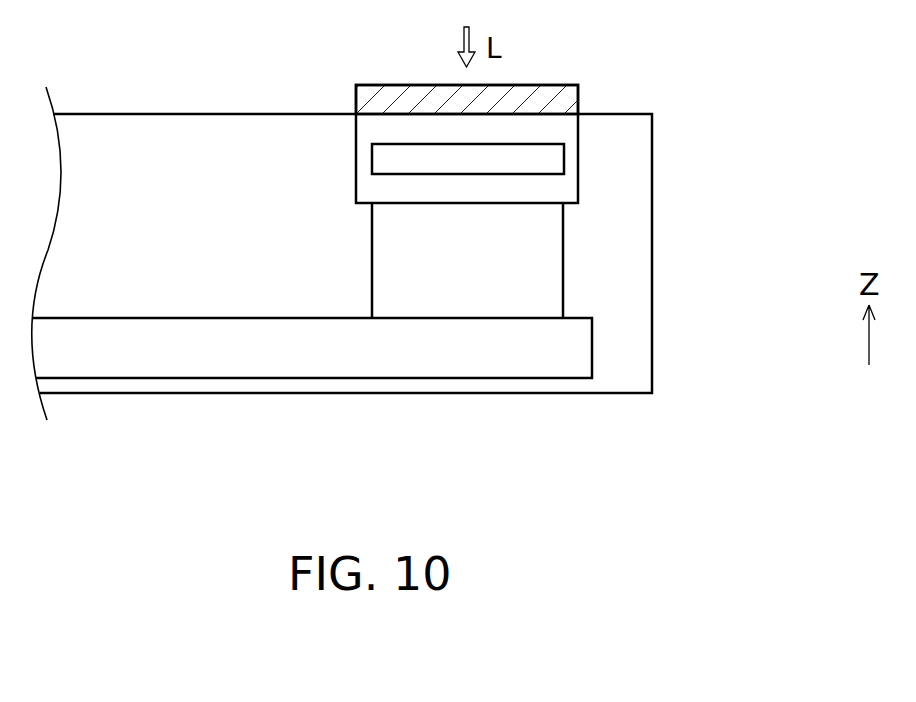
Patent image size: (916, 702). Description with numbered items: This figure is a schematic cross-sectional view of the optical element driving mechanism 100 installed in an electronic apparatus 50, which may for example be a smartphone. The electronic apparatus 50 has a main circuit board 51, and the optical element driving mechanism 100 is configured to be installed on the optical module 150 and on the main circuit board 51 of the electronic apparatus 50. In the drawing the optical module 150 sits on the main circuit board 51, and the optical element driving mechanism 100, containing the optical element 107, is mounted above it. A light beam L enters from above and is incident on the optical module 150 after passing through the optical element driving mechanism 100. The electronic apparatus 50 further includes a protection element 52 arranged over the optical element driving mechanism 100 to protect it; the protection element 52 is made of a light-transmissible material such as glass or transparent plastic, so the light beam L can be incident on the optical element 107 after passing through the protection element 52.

The electronic apparatus 50 is at (130, 405).
The main circuit board 51 is at (483, 352).
The protection element 52 is at (545, 102).
The optical element driving mechanism 100 is at (582, 174).
The optical element 107 is at (547, 157).
The optical module 150 is at (567, 288).